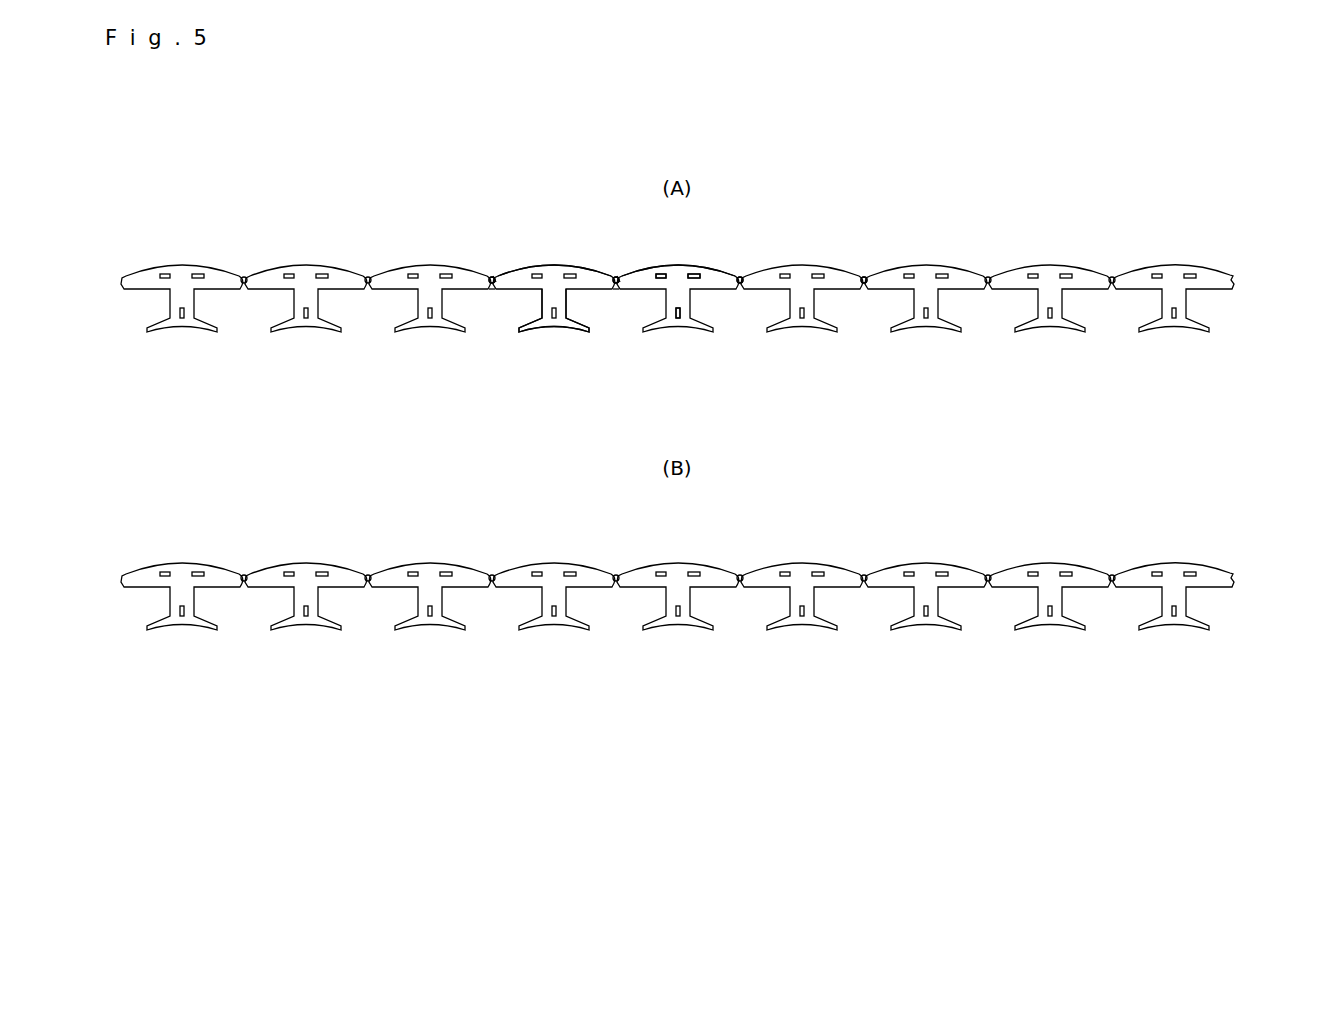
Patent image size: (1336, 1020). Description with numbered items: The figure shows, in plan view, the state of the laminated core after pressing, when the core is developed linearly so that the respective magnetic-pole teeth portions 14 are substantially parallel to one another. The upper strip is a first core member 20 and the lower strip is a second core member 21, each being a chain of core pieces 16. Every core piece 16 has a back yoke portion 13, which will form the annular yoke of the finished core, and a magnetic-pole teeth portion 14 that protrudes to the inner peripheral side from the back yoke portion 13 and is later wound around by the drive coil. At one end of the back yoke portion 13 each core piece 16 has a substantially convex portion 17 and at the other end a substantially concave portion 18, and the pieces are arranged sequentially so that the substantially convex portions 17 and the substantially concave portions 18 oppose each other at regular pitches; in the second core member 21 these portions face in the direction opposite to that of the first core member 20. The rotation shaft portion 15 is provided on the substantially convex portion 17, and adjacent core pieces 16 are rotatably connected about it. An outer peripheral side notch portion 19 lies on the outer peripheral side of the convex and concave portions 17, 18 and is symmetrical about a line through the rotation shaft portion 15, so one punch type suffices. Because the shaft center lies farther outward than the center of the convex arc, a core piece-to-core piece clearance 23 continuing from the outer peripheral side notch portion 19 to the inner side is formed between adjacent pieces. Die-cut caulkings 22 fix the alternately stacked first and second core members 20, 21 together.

The back yoke portion 13 is at (583, 268).
The magnetic-pole teeth portion 14 is at (542, 298).
The rotation shaft portion 15 is at (496, 272).
The core piece 16 is at (550, 267).
The substantially convex portion 17 is at (492, 289).
The substantially concave portion 18 is at (491, 276).
The outer peripheral side notch portion 19 is at (742, 276).
The first core member 20 is at (1233, 311).
The second core member 21 is at (1228, 611).
The die-cut caulking 22 is at (664, 280).
The core piece-to-core piece clearance 23 is at (866, 276).